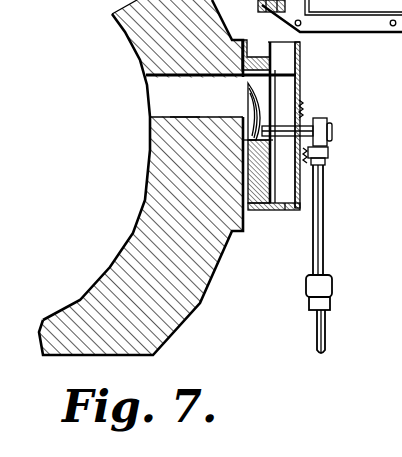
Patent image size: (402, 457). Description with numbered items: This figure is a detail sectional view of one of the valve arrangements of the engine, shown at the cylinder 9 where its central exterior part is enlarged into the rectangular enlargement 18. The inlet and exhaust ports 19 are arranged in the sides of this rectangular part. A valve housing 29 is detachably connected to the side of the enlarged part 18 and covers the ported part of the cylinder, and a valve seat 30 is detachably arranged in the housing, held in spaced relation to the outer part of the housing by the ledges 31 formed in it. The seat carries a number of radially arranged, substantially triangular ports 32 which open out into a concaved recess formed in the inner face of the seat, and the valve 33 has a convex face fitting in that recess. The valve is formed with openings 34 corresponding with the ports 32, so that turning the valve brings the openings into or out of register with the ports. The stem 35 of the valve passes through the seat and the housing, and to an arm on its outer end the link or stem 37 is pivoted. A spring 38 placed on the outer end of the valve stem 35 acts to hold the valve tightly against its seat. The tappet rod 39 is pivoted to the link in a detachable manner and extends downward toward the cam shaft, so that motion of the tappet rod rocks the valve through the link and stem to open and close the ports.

The wheel rim body 9 is at (138, 32).
The enlarged rectangular part 18 is at (240, 41).
The inlet and exhaust ports 19 is at (166, 96).
The valve housing 29 is at (292, 210).
The valve seat 30 is at (256, 212).
The ledges 31 is at (285, 76).
The ports 32 is at (182, 115).
The valve 33 is at (247, 107).
The openings 34 is at (327, 164).
The valve stem 35 is at (289, 131).
The link or stem 37 is at (328, 242).
The spring 38 is at (328, 152).
The tappet rod 39 is at (328, 337).